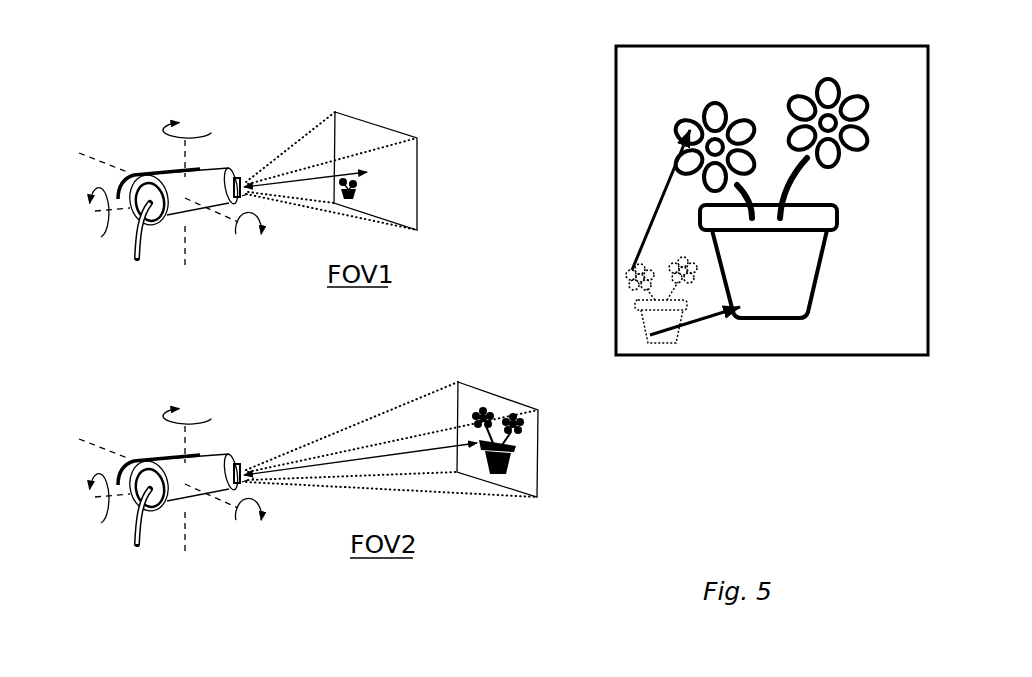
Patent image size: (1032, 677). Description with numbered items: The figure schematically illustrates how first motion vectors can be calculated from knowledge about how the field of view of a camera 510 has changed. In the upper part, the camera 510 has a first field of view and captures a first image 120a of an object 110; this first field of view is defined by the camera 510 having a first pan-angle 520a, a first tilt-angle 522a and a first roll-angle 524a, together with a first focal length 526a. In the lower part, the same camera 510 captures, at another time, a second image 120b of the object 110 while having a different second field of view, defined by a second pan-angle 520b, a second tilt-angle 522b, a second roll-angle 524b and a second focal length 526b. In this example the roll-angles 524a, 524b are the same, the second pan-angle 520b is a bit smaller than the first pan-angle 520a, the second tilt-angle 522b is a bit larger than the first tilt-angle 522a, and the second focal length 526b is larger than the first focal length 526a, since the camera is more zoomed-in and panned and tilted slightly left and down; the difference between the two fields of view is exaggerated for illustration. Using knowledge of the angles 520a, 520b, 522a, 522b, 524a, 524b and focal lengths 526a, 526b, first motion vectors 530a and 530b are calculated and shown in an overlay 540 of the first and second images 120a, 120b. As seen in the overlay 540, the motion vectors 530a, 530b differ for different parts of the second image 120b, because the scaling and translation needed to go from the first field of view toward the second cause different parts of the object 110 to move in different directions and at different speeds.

The camera 510 is at (177, 177).
The first pan-angle 520a is at (185, 122).
The second pan-angle 520b is at (185, 409).
The first tilt-angle 522a is at (249, 222).
The second tilt-angle 522b is at (249, 510).
The first roll-angle 524a is at (105, 217).
The second roll-angle 524b is at (105, 504).
The first focal length 526a is at (311, 180).
The second focal length 526b is at (310, 465).
The first image 120a is at (373, 120).
The second image 120b is at (497, 392).
The object 110 is at (803, 262).
The first motion vector 530a is at (698, 318).
The first motion vector 530b is at (650, 217).
The overlay 540 is at (860, 382).